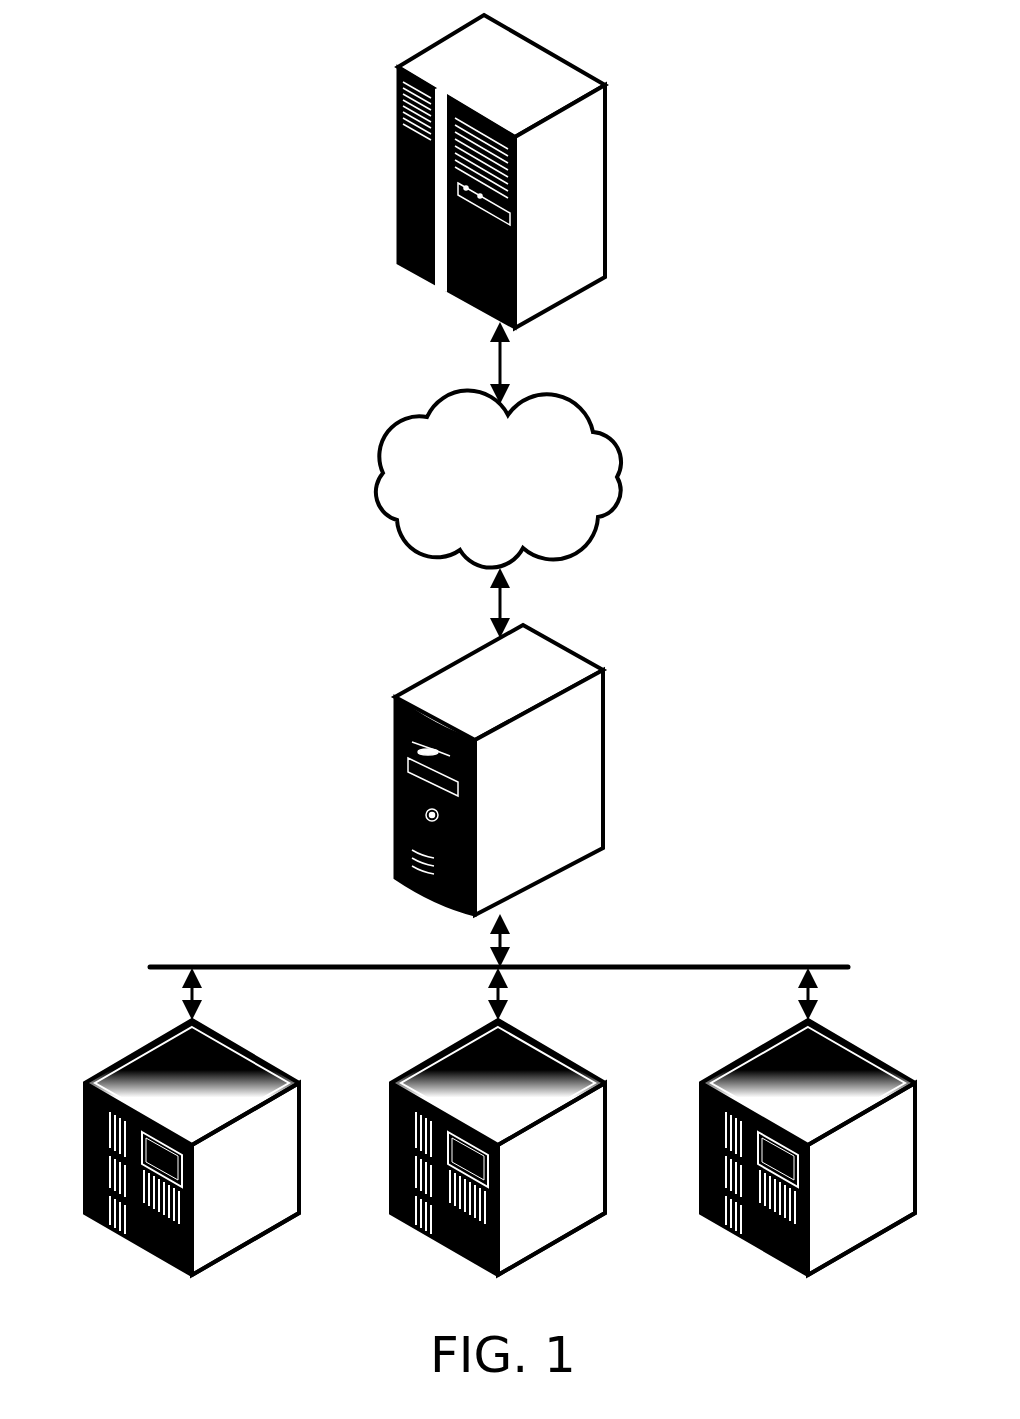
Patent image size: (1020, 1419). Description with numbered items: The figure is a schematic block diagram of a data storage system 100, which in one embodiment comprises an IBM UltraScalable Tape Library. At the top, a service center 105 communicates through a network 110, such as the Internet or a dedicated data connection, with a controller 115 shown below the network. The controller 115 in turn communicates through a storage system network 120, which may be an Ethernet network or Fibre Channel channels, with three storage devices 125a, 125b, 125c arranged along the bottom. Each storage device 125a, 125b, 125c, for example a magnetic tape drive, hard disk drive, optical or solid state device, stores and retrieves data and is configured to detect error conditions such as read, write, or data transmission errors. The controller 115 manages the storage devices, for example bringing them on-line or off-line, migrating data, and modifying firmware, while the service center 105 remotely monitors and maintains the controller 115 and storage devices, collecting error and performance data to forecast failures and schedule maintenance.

The data storage system 100 is at (112, 84).
The service center 105 is at (396, 67).
The network 110 is at (481, 509).
The controller 115 is at (452, 663).
The storage system network 120 is at (336, 964).
The storage device 125a is at (143, 1052).
The storage device 125b is at (466, 1041).
The storage device 125c is at (768, 1041).